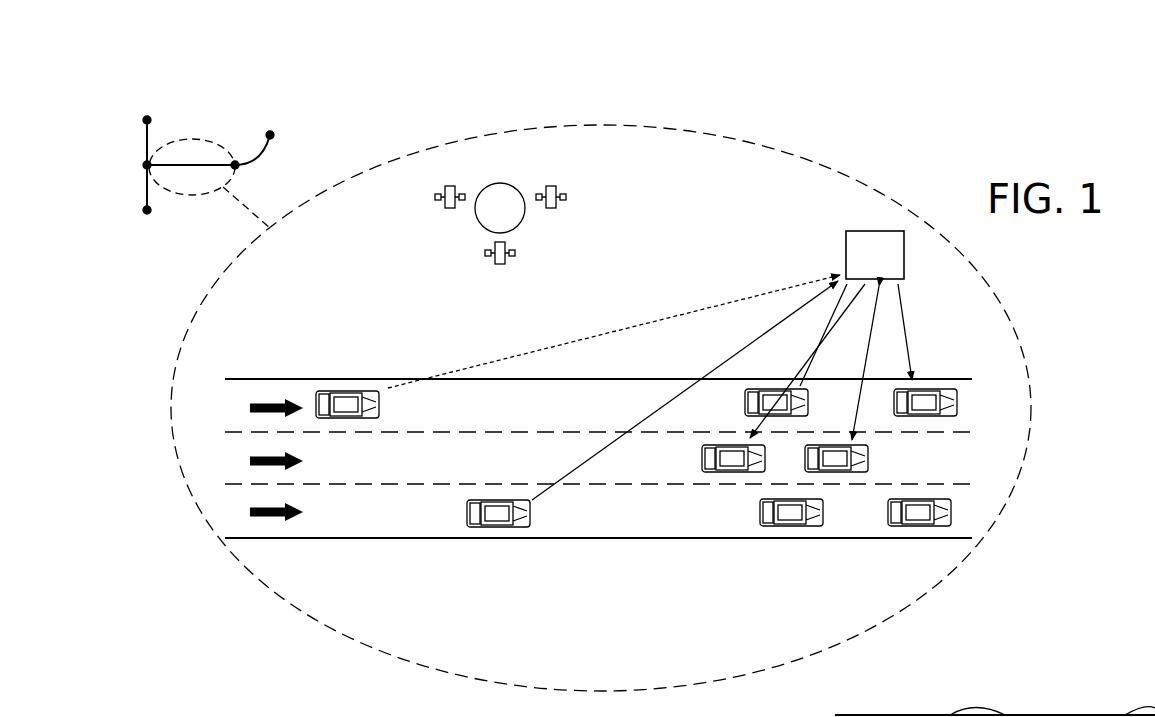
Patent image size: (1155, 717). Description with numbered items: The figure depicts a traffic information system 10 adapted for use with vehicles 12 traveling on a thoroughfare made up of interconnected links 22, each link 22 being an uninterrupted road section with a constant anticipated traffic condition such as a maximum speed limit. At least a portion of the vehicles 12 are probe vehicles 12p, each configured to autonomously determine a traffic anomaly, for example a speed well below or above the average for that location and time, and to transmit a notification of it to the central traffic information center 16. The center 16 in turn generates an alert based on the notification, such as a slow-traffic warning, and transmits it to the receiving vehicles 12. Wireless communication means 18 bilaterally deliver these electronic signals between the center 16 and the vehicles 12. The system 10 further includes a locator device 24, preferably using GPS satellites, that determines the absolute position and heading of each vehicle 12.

The traffic information system 10 is at (377, 265).
The vehicle 12 is at (757, 388).
The probe vehicle 12p is at (337, 391).
The central traffic information center 16 is at (863, 223).
The wireless communication means 18 is at (618, 323).
The link 22 is at (255, 155).
The locator device 24 is at (560, 224).